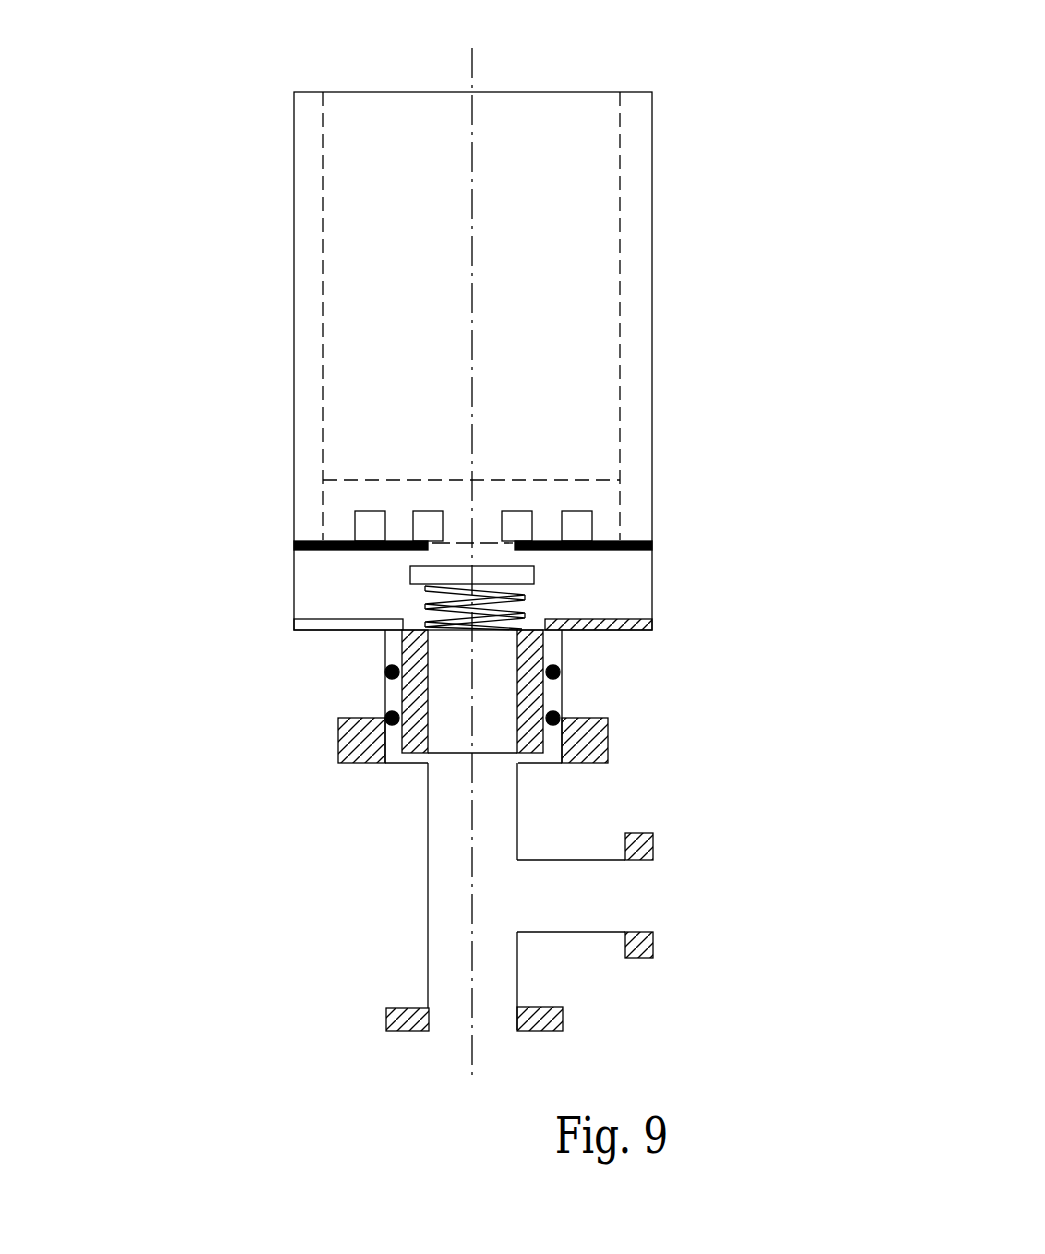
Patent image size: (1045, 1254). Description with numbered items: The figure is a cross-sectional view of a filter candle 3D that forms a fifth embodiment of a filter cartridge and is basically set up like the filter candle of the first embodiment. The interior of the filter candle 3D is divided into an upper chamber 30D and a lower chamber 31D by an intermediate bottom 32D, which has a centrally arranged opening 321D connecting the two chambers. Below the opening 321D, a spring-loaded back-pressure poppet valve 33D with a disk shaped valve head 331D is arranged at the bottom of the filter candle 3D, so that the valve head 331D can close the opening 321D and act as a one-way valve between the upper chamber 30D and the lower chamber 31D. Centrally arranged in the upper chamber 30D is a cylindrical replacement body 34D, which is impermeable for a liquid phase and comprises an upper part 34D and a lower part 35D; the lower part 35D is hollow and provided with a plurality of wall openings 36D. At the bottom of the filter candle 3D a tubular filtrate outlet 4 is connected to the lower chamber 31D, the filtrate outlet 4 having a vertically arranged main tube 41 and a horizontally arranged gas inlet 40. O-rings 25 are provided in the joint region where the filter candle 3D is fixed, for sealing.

The filter candle 3D is at (272, 121).
The upper chamber 30D is at (635, 150).
The valve head 331D is at (483, 573).
The replacement body 34D is at (366, 320).
The lower part 35D is at (438, 492).
The wall openings 36D is at (425, 522).
The intermediate bottom 32D is at (598, 537).
The lower chamber 31D is at (630, 578).
The opening 321D is at (458, 547).
The spring-loaded back-pressure poppet valve 33D is at (520, 595).
The O-rings 25 is at (385, 673).
The filtrate outlet 4 is at (400, 845).
The gas inlet 40 is at (603, 898).
The main tube 41 is at (450, 991).